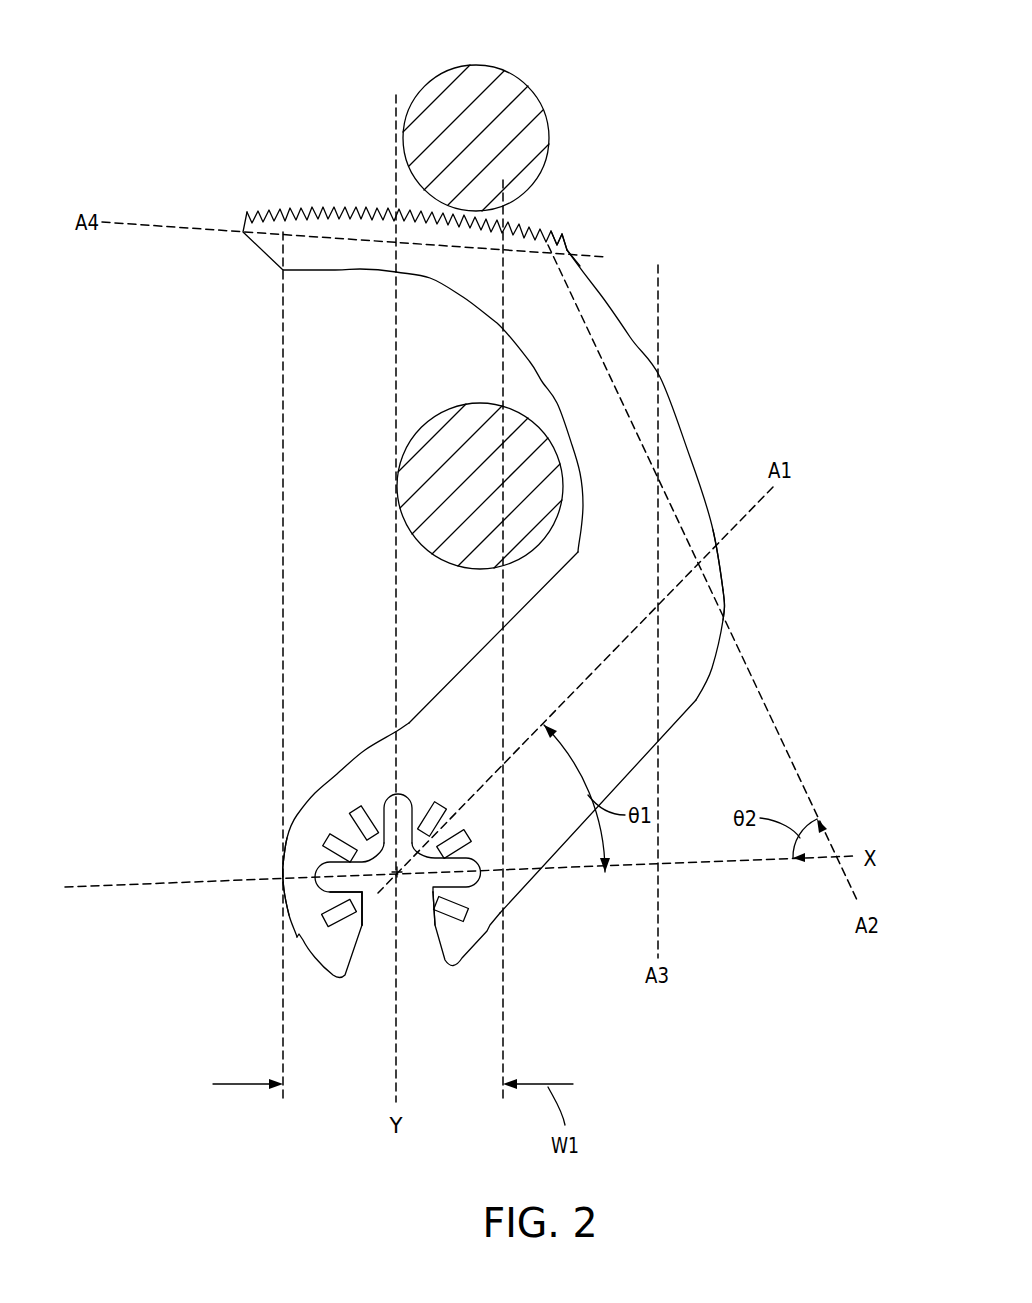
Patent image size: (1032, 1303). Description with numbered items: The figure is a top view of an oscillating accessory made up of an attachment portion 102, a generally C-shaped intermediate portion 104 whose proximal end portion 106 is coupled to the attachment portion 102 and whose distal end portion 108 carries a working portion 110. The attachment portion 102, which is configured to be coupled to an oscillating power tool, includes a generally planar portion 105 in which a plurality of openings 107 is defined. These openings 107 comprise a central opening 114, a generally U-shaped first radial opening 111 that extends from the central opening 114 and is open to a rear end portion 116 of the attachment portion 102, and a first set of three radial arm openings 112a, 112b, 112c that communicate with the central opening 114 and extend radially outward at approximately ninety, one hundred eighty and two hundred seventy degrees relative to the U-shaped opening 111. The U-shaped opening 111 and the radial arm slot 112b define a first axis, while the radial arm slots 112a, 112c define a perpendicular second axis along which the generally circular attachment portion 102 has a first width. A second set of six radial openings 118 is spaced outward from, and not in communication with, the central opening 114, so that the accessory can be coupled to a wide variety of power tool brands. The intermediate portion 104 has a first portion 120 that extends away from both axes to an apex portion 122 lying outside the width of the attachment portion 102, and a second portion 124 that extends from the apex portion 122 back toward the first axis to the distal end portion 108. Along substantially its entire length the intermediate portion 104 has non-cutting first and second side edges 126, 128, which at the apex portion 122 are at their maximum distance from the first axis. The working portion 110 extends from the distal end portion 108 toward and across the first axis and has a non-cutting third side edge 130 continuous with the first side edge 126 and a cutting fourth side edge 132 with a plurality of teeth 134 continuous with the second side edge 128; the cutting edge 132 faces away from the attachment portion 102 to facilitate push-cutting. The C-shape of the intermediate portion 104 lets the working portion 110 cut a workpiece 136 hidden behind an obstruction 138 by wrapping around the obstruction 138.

The attachment portion 102 is at (266, 897).
The intermediate portion 104 is at (790, 628).
The generally planar portion 105 is at (327, 970).
The proximal end portion 106 is at (410, 708).
The openings 107 is at (418, 910).
The distal end portion 108 is at (590, 250).
The working portion 110 is at (331, 190).
The U-shaped first radial opening 111 is at (373, 945).
The radial arm opening 112a is at (467, 878).
The radial arm opening 112b is at (388, 805).
The radial arm opening 112c is at (325, 875).
The central opening 114 is at (362, 895).
The rear end portion 116 is at (458, 970).
The second set of six radial openings 118 is at (327, 837).
The first portion 120 is at (637, 767).
The apex portion 122 is at (740, 588).
The second portion 124 is at (668, 374).
The first side edge 126 is at (532, 357).
The second side edge 128 is at (695, 703).
The third side edge 130 is at (340, 272).
The fourth side edge 132 is at (283, 220).
The teeth 134 is at (535, 216).
The workpiece 136 is at (508, 105).
The obstruction 138 is at (428, 441).